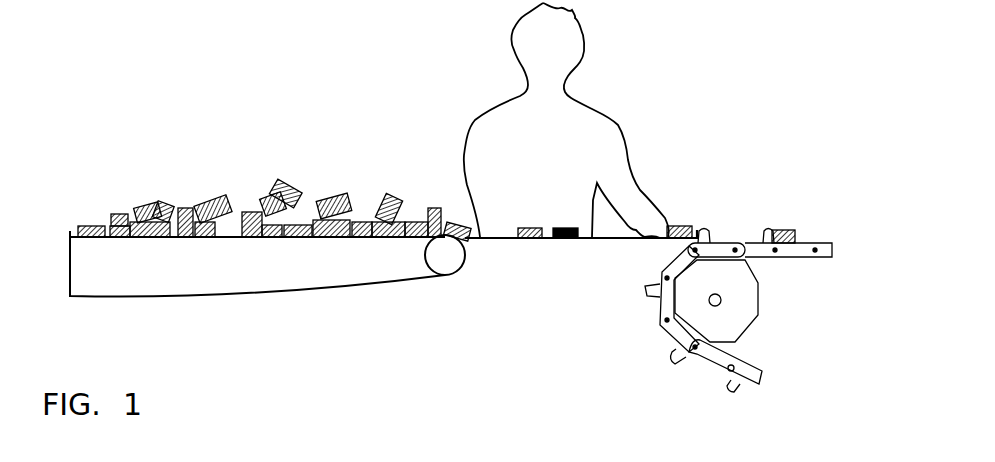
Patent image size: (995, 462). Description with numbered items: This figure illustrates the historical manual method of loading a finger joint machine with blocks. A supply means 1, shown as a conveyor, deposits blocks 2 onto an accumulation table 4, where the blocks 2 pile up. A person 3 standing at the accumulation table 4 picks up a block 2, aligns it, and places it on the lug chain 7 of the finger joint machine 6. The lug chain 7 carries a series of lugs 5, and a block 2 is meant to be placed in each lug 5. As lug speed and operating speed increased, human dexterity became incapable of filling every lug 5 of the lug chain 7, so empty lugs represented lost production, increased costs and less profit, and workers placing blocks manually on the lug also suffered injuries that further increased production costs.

The supply means 1 is at (152, 274).
The blocks 2 is at (278, 188).
The person 3 is at (544, 154).
The accumulation table 4 is at (546, 276).
The lug 5 is at (670, 360).
The finger joint machine 6 is at (805, 330).
The lug chain 7 is at (818, 242).